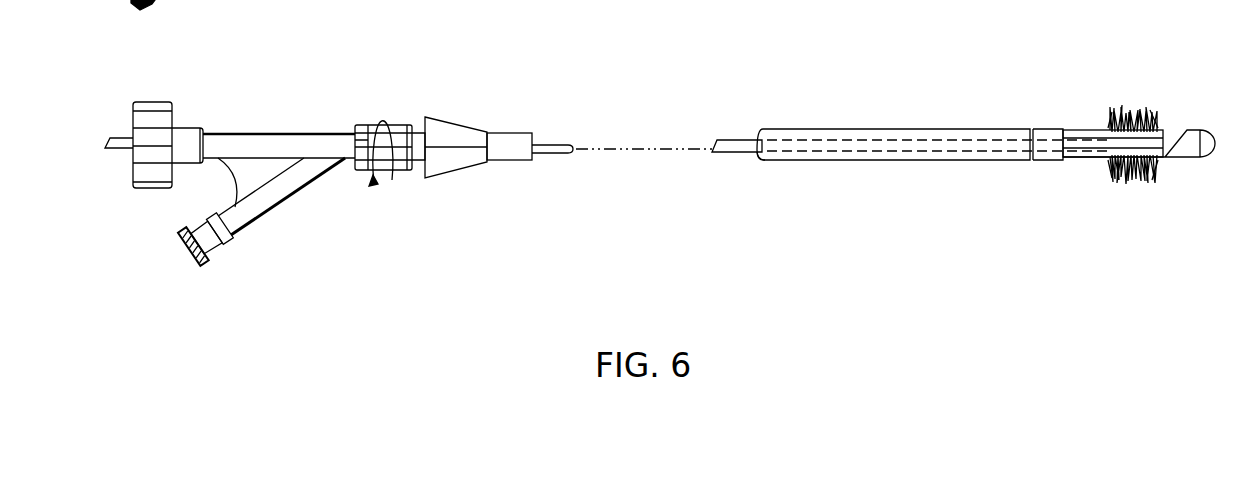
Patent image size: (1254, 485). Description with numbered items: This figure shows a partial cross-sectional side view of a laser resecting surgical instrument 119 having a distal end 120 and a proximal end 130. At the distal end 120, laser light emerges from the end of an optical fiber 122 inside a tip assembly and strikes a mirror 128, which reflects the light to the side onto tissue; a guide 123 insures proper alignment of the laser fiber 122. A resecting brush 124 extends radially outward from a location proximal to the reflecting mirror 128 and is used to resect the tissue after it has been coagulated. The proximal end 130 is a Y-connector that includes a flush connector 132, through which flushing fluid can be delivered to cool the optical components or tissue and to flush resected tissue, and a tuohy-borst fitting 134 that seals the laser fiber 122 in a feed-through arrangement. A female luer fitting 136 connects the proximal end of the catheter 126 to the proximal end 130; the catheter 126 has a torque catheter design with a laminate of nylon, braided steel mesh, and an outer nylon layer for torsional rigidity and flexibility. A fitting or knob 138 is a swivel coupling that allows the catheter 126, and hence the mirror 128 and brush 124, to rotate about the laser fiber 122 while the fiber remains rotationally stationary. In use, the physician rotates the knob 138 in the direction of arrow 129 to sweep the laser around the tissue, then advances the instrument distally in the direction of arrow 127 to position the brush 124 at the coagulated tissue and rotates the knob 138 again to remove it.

The surgical instrument 119 is at (806, 52).
The distal end 120 is at (1080, 220).
The optical fiber 122 is at (127, 150).
The guide 123 is at (1155, 158).
The resecting brush 124 is at (1125, 122).
The catheter 126 is at (502, 140).
The arrow 127 is at (1074, 176).
The mirror 128 is at (1178, 131).
The arrow 129 is at (390, 176).
The proximal end 130 is at (316, 196).
The flush connector 132 is at (218, 250).
The tuohy-borst fitting 134 is at (172, 115).
The female luer fitting 136 is at (468, 168).
The knob 138 is at (407, 170).